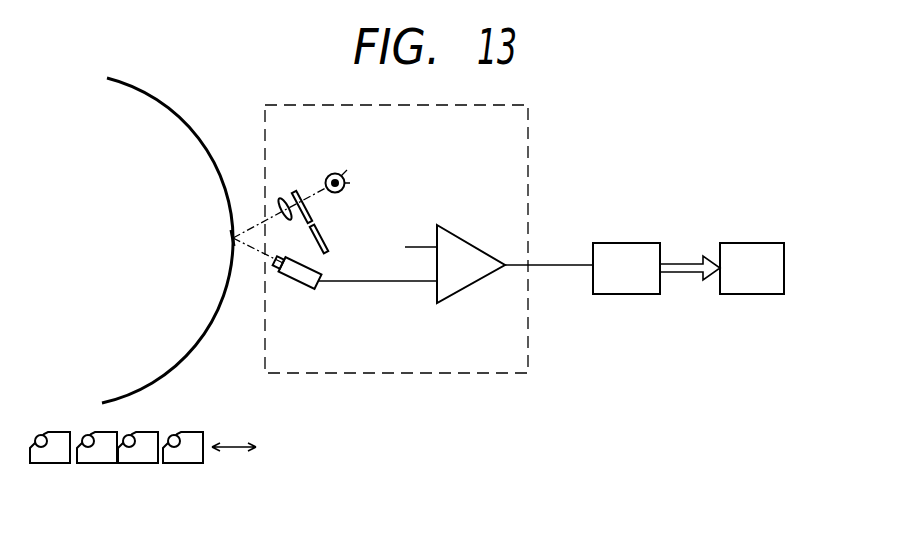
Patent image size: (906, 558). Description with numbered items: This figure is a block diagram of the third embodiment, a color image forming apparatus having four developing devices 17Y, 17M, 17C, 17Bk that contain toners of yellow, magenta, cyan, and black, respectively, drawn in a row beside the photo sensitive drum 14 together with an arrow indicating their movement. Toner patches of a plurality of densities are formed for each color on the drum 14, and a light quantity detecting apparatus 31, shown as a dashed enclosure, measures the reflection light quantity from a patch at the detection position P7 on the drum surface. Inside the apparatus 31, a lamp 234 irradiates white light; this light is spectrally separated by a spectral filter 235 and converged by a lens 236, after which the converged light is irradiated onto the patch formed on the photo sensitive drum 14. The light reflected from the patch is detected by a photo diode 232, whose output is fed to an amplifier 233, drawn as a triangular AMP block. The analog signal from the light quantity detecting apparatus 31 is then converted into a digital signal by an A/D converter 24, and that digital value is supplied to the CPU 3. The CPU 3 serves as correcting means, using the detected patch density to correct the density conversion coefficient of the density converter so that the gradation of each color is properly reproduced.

The photo sensitive drum 14 is at (176, 106).
The detection point P7 is at (232, 226).
The light quantity detecting apparatus 31 is at (529, 128).
The lamp 234 is at (333, 172).
The lens 236 is at (283, 196).
The spectral filter 235 is at (309, 212).
The photo diode 232 is at (290, 286).
The amplifier 233 is at (462, 238).
The A/D converter 24 is at (647, 243).
The CPU 3 is at (772, 243).
The developing device 17Y is at (44, 464).
The developing device 17M is at (92, 464).
The developing device 17C is at (137, 464).
The developing device 17Bk is at (185, 464).